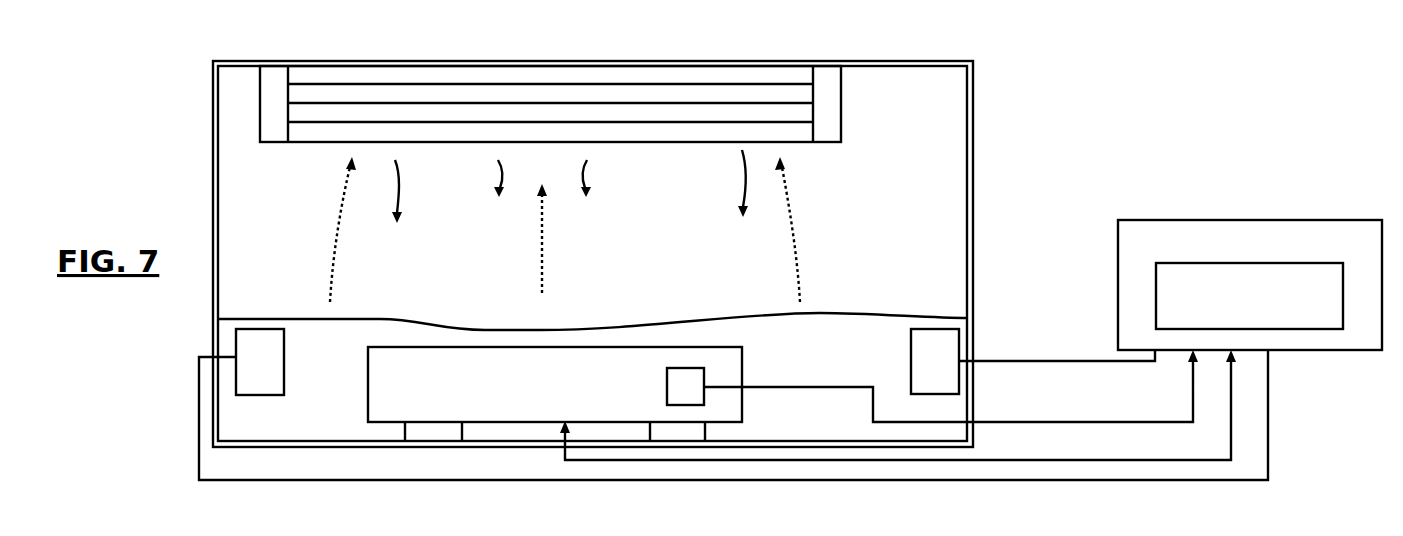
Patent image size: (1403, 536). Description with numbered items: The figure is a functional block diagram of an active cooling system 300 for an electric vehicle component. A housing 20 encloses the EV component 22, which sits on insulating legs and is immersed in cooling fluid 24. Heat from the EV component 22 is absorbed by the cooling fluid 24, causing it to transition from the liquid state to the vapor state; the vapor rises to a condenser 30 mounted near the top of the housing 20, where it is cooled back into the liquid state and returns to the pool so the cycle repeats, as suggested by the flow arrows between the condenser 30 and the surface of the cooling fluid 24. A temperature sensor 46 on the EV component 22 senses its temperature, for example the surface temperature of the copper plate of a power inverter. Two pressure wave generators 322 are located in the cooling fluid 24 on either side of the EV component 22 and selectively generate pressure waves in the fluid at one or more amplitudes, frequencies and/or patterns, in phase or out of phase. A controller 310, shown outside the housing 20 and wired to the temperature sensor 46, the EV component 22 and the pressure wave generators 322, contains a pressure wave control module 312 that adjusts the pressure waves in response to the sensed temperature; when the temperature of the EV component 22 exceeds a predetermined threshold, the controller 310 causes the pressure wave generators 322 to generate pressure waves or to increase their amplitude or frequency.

The active cooling system 300 is at (187, 68).
The housing 20 is at (213, 184).
The condenser 30 is at (635, 142).
The cooling fluid 24 is at (290, 319).
The EV component 22 is at (523, 422).
The temperature sensor 46 is at (687, 405).
The pressure wave generator 322 is at (213, 348).
The controller 310 is at (1313, 220).
The pressure wave control module 312 is at (1305, 329).